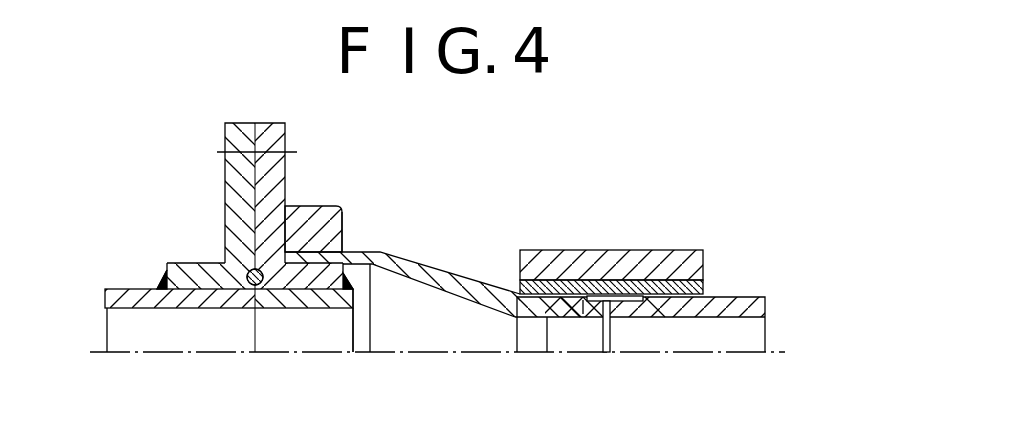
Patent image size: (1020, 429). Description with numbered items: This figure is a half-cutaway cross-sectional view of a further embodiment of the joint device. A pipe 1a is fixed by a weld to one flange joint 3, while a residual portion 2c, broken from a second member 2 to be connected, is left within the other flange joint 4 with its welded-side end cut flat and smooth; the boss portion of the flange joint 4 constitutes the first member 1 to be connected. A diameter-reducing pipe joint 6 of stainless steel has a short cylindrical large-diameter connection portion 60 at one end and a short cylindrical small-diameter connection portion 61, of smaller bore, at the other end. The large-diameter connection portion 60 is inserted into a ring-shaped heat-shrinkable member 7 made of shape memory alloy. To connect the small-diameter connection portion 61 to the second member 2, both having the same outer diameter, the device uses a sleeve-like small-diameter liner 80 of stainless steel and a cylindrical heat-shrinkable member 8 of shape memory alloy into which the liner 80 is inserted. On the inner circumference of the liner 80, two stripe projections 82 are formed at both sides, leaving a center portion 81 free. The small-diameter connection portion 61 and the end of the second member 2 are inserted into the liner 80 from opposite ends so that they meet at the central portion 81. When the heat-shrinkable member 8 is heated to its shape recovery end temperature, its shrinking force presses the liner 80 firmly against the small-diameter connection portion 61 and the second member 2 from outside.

The first member to be connected 1 is at (293, 330).
The pipe 1a is at (183, 330).
The second member to be connected 2 is at (742, 297).
The residual portion 2c is at (352, 333).
The flange joint 3 is at (225, 185).
The flange joint 4 is at (287, 160).
The diameter-reducing pipe joint 6 is at (455, 276).
The heat-shrinkable member 7 is at (312, 207).
The heat-shrinkable member 8 is at (557, 250).
The large-diameter connection portion 60 is at (343, 212).
The small-diameter connection portion 61 is at (588, 300).
The liner 80 is at (614, 285).
The center portion 81 is at (600, 340).
The projections 82 is at (583, 298).